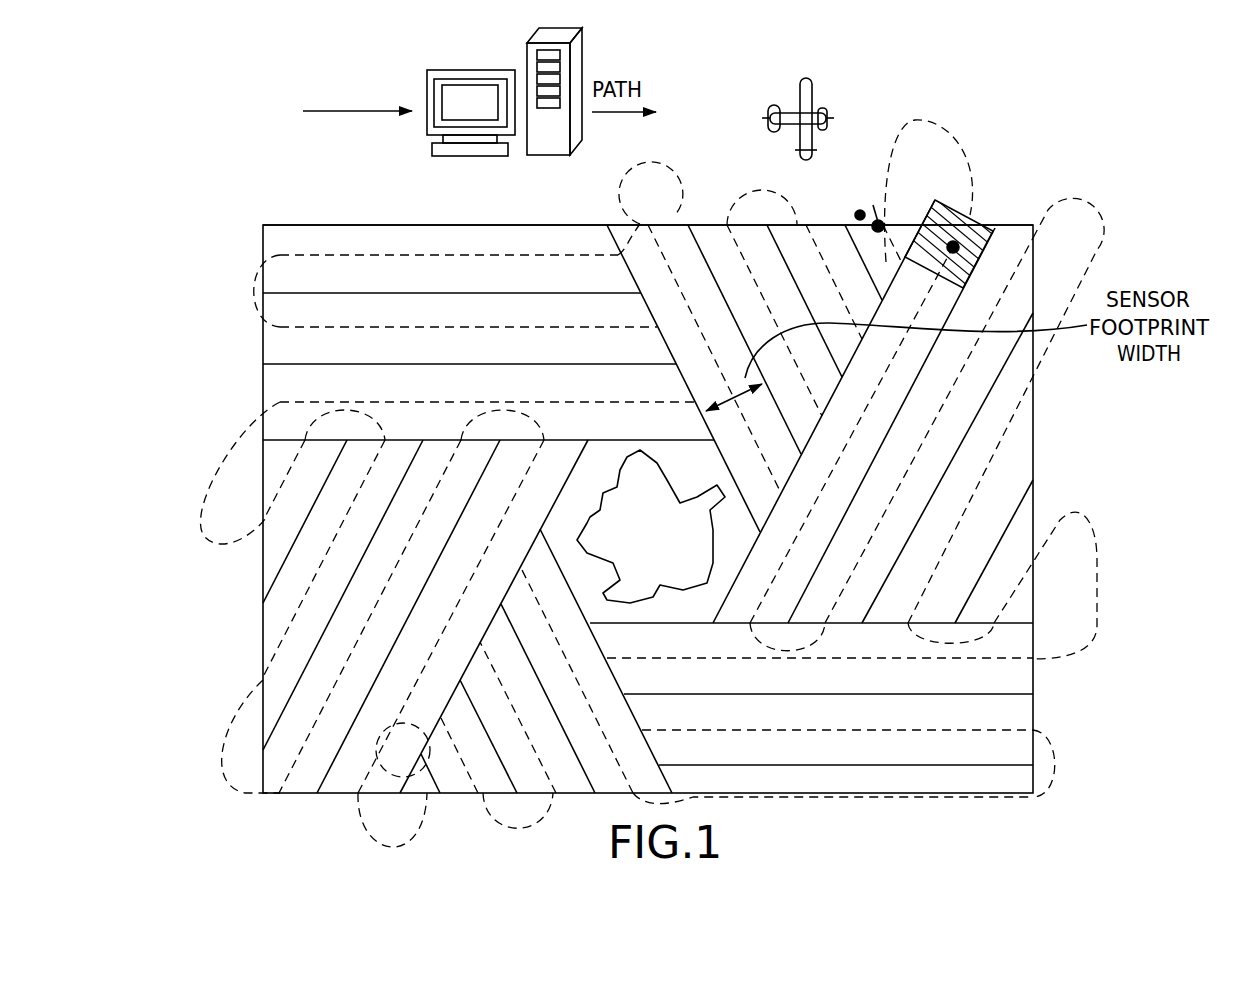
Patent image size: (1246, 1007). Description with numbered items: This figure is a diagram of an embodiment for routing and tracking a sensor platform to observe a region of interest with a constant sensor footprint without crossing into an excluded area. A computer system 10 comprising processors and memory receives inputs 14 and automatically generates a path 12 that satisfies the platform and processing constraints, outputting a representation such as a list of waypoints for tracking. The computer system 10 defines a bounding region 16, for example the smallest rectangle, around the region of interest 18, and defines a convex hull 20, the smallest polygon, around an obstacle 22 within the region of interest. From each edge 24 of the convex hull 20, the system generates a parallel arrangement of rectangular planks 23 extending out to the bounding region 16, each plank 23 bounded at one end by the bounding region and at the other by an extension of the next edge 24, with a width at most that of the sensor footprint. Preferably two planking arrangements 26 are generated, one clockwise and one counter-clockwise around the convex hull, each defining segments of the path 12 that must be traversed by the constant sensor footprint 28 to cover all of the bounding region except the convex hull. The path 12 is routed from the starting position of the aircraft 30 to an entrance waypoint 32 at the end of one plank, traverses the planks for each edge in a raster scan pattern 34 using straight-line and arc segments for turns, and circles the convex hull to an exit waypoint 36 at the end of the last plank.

The computer system 10 is at (508, 158).
The path 12 is at (1095, 248).
The inputs 14 is at (394, 106).
The bounding region 16 is at (342, 224).
The region of interest 18 is at (326, 282).
The convex hull 20 is at (545, 597).
The obstacle 22 is at (666, 574).
The rectangular plank 23 is at (900, 420).
The edge of the convex hull 24 is at (758, 561).
The planking arrangement 26 is at (1084, 677).
The constant sensor footprint 28 is at (921, 226).
The aircraft 30 is at (797, 107).
The entrance waypoint 32 is at (978, 231).
The raster scan pattern 34 is at (690, 212).
The exit waypoint 36 is at (858, 214).